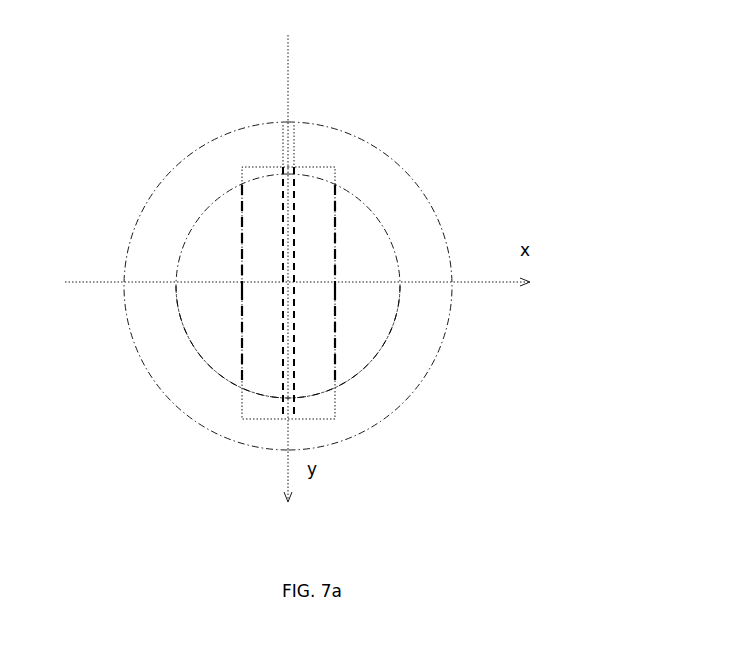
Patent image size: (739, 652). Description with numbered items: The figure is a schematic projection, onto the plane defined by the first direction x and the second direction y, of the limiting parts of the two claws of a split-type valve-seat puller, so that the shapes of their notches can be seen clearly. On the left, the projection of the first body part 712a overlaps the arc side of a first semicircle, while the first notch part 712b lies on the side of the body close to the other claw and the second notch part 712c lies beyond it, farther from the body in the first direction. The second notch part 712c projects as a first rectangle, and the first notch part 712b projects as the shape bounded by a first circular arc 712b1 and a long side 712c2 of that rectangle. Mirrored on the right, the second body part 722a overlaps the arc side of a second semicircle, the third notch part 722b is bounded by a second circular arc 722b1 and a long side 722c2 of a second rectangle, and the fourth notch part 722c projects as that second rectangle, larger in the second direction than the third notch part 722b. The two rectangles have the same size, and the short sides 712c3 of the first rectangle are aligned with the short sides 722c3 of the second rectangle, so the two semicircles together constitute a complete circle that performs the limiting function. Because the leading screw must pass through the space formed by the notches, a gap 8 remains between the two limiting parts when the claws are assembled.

The gap 8 is at (288, 125).
The first body part 712a is at (185, 392).
The second body part 722a is at (390, 397).
The first notch part 712b is at (232, 345).
The third notch part 722b is at (353, 372).
The first circular arc 712b1 is at (178, 270).
The second circular arc 722b1 is at (398, 282).
The second notch part 712c is at (265, 183).
The fourth notch part 722c is at (318, 183).
The long side of first rectangle 712c2 is at (242, 208).
The long side of second rectangle 722c2 is at (335, 208).
The short side of second notch part 712c3 is at (265, 420).
The short side of fourth notch part 722c3 is at (317, 420).